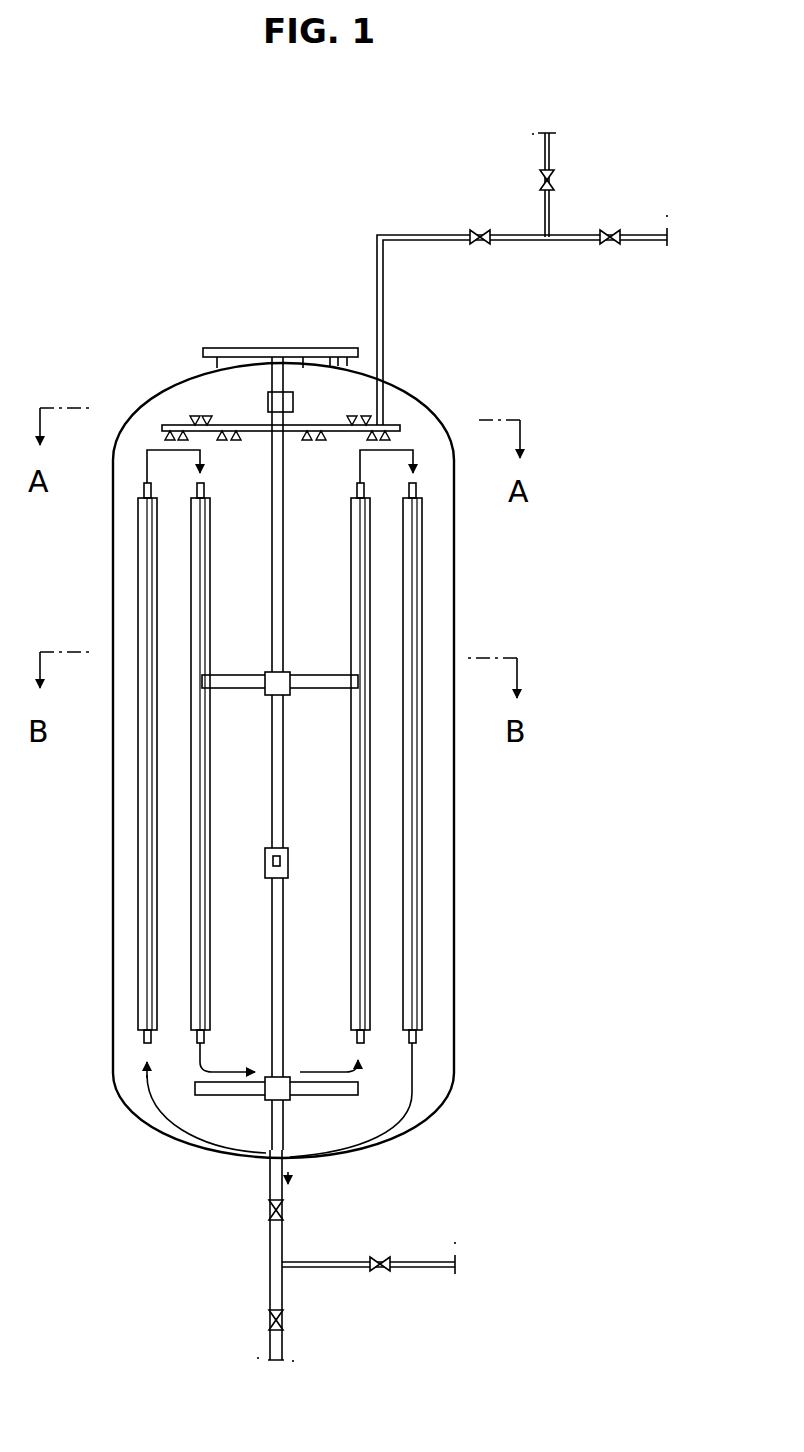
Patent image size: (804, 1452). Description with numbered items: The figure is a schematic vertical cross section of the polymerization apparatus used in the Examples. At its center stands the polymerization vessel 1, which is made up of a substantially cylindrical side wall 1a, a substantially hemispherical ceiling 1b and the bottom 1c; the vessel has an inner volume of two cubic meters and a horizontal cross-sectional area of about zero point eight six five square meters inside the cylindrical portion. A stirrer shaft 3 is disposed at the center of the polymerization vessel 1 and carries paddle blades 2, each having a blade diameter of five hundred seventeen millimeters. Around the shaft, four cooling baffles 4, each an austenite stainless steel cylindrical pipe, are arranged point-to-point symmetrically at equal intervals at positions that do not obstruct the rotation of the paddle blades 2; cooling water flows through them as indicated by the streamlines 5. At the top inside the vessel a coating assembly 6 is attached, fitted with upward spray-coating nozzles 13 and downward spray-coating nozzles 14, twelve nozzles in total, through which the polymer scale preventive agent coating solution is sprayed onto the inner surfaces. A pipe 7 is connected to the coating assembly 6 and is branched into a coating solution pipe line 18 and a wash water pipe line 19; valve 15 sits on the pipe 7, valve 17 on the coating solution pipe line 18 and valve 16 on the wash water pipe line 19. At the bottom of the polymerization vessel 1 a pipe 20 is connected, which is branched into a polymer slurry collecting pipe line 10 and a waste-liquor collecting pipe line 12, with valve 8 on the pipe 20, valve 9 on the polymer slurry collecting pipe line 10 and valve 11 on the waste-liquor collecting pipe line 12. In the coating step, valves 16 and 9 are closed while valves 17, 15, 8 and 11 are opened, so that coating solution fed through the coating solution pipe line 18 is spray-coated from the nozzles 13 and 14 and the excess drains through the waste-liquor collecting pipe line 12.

The polymerization vessel 1 is at (280, 746).
The cylindrical side wall 1a is at (455, 556).
The hemispherical ceiling 1b is at (420, 400).
The bottom 1c is at (147, 1126).
The paddle blades 2 is at (323, 689).
The stirrer shaft 3 is at (283, 640).
The cooling baffles 4 is at (196, 795).
The streamlines 5 is at (160, 452).
The coating assembly 6 is at (190, 426).
The pipe 7 is at (377, 268).
The valve 8 is at (268, 1210).
The valve 9 is at (268, 1320).
The polymer slurry collecting pipe line 10 is at (283, 1346).
The valve 11 is at (380, 1257).
The waste-liquor collecting pipe line 12 is at (440, 1262).
The upward spray-coating nozzles 13 is at (197, 416).
The downward spray-coating nozzles 14 is at (222, 441).
The valve 15 is at (478, 236).
The valve 16 is at (551, 181).
The valve 17 is at (610, 244).
The coating solution pipe line 18 is at (657, 240).
The wash water pipe line 19 is at (549, 156).
The pipe 20 is at (268, 1178).